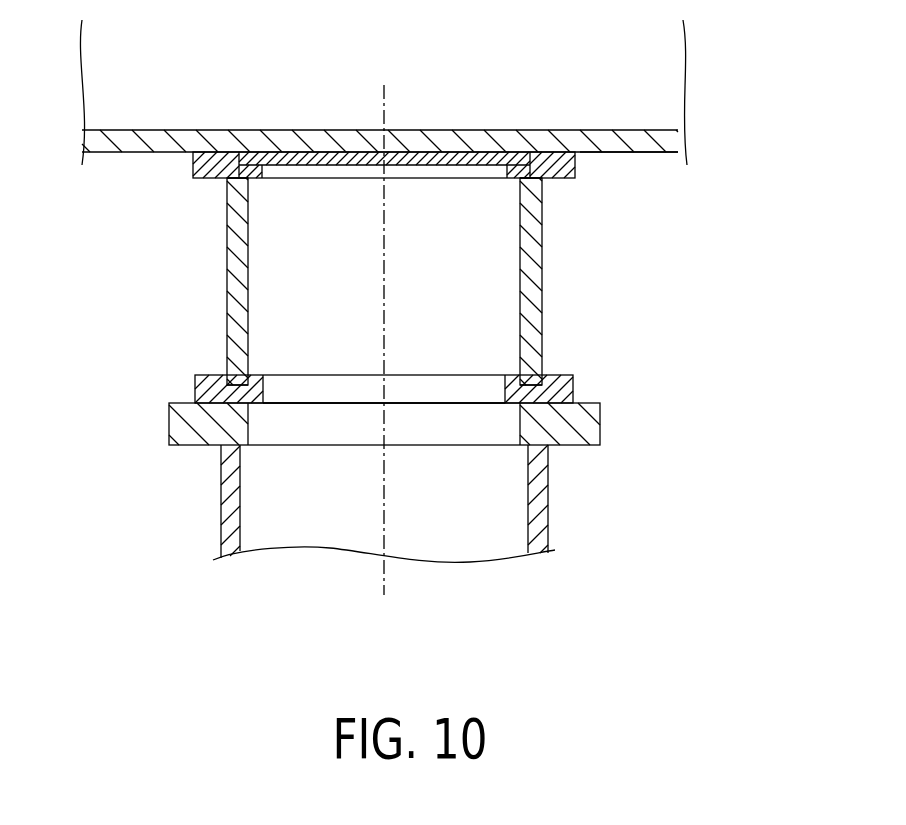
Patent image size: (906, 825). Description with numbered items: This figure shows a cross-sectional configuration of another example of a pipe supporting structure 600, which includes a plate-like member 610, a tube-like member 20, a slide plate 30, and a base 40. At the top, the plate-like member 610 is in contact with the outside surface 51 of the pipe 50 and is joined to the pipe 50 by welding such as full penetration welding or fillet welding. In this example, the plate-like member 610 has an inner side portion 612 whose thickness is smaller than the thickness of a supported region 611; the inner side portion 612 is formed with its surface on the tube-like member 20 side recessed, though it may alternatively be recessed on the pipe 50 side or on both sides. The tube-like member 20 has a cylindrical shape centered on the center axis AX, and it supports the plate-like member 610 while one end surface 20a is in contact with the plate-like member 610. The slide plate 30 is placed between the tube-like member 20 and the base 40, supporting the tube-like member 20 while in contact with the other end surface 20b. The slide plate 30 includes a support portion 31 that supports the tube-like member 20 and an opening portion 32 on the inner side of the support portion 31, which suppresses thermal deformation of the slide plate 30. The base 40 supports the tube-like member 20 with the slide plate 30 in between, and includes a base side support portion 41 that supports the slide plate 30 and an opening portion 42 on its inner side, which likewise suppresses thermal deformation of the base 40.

The pipe 50 is at (604, 122).
The outside surface 51 is at (652, 153).
The pipe supporting structure 600 is at (630, 230).
The plate-like member 610 is at (185, 167).
The supported region 611 is at (548, 184).
The inner side portion 612 is at (327, 168).
The tube-like member 20 is at (237, 245).
The one end surface 20a is at (241, 152).
The other end surface 20b is at (232, 380).
The slide plate 30 is at (185, 388).
The support portion 31 is at (567, 390).
The opening portion 32 is at (485, 390).
The base 40 is at (160, 425).
The base side support portion 41 is at (588, 422).
The opening portion 42 is at (428, 425).
The center axis AX is at (384, 322).